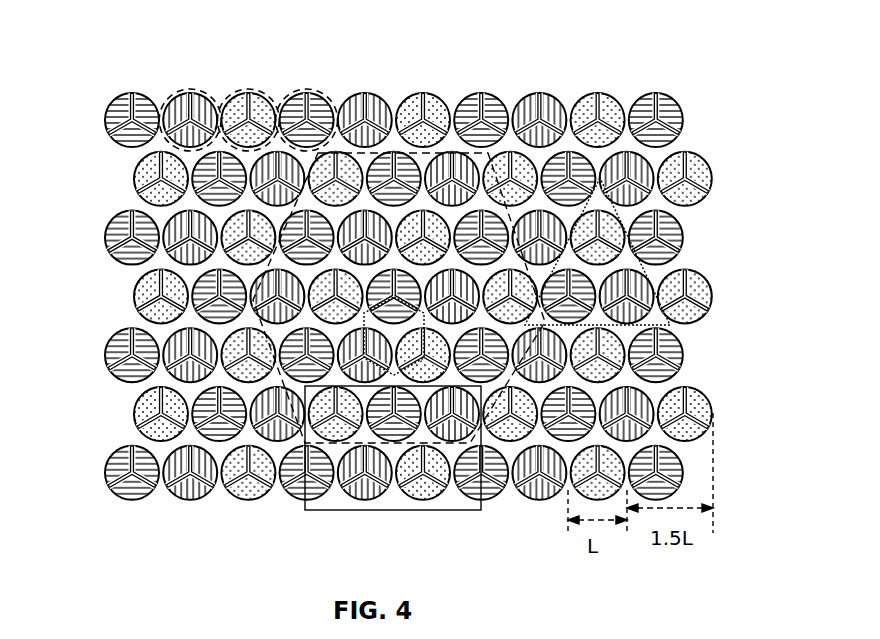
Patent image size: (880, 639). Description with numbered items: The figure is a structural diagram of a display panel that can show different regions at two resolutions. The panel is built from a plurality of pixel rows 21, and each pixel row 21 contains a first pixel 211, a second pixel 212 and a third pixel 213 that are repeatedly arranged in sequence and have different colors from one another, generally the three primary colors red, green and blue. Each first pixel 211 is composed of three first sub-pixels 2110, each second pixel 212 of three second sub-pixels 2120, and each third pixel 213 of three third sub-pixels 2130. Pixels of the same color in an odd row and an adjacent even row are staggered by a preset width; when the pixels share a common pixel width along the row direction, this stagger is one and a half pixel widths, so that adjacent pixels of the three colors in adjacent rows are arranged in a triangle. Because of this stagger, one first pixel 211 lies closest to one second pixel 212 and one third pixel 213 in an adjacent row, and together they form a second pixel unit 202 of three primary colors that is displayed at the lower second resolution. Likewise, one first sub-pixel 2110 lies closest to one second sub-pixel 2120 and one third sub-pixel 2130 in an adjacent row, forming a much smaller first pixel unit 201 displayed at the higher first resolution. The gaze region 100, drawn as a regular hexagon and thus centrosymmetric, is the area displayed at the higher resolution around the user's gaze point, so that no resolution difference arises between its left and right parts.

The pixel row 21 is at (87, 93).
The first pixel 211 is at (190, 91).
The second pixel 212 is at (247, 91).
The third pixel 213 is at (303, 91).
The first sub-pixel 2110 is at (400, 78).
The second sub-pixel 2120 is at (433, 103).
The third sub-pixel 2130 is at (492, 103).
The gaze region 100 is at (496, 209).
The second pixel unit 202 is at (643, 263).
The first pixel unit 201 is at (428, 326).